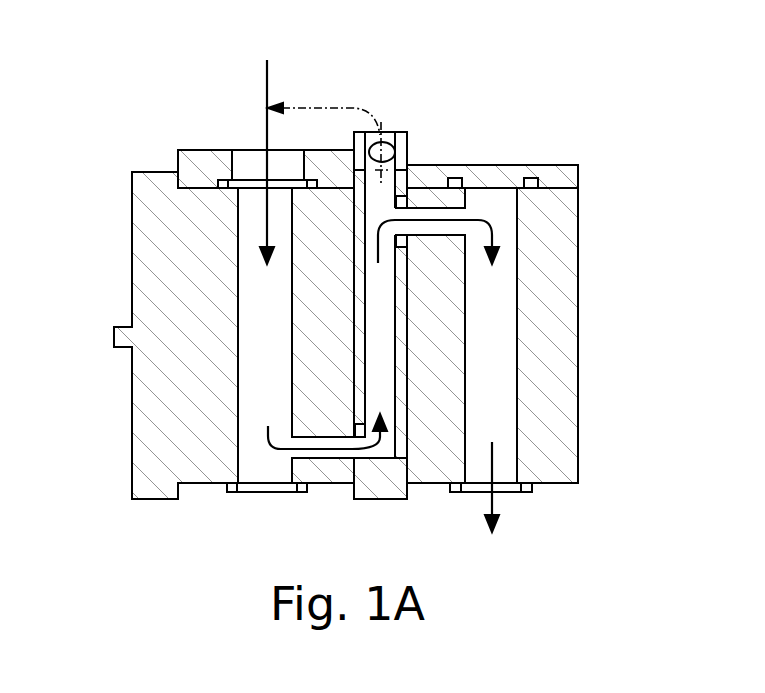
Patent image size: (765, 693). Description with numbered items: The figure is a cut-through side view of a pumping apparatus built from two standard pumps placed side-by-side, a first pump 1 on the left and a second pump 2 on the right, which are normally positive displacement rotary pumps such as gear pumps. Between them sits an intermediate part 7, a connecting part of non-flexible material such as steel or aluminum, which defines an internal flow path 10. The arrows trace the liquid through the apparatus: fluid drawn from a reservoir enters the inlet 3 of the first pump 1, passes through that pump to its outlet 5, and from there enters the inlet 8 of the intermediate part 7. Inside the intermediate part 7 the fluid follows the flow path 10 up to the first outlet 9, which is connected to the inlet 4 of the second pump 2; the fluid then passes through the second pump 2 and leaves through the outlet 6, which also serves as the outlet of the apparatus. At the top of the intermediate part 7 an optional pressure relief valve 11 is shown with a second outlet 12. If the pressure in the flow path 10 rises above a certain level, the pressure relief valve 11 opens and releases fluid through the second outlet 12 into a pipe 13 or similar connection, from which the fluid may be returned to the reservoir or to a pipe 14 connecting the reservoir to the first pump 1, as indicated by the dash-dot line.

The first pump 1 is at (142, 270).
The second pump 2 is at (563, 247).
The inlet of the first pump 3 is at (252, 150).
The inlet of the second pump 4 is at (408, 210).
The outlet of the first pump 5 is at (353, 455).
The outlet of the second pump 6 is at (505, 490).
The intermediate part 7 is at (393, 498).
The inlet of the intermediate part 8 is at (358, 443).
The first outlet of the intermediate part 9 is at (408, 227).
The flow path 10 is at (489, 305).
The pressure relief valve 11 is at (407, 150).
The second outlet 12 is at (383, 135).
The pipe 13 is at (318, 108).
The pipe 14 is at (265, 73).